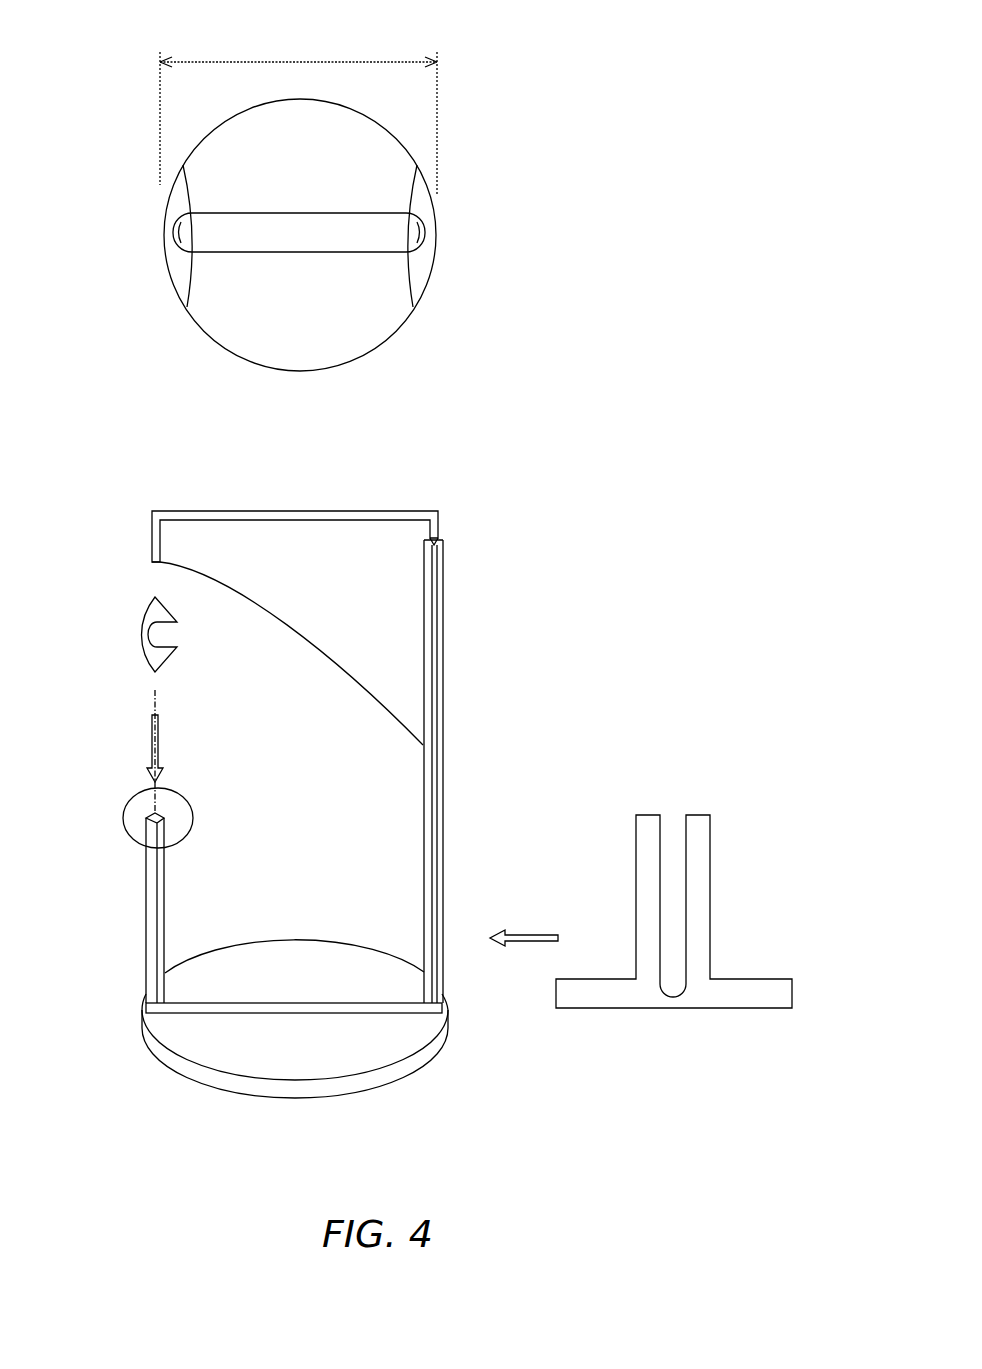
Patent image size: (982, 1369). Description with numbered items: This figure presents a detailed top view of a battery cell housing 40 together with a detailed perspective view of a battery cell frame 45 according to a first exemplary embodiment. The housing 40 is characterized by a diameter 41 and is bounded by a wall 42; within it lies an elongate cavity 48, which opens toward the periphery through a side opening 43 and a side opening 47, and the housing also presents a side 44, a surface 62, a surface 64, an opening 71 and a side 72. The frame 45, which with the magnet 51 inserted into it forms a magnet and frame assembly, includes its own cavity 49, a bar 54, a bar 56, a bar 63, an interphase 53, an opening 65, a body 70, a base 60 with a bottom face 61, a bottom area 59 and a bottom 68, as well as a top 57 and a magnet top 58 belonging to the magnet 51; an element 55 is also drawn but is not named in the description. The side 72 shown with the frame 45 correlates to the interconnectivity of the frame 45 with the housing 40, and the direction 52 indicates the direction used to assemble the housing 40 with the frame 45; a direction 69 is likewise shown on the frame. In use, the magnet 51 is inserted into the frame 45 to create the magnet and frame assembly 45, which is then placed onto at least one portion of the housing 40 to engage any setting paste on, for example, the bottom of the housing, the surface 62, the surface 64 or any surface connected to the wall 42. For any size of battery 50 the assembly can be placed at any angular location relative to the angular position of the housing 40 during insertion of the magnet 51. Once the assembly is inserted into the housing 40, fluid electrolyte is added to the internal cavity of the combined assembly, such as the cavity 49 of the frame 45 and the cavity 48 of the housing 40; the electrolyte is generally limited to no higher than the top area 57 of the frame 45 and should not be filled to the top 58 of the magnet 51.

The housing 40 is at (580, 138).
The diameter 41 is at (297, 58).
The wall 42 is at (168, 275).
The side opening 43 is at (196, 236).
The side 44 is at (418, 200).
The frame 45 is at (570, 565).
The side opening 47 is at (400, 226).
The cavity 48 is at (302, 226).
The cavity 49 is at (333, 798).
The battery 50 is at (612, 451).
The magnet 51 is at (315, 545).
The direction 52 is at (153, 740).
The interphase 53 is at (130, 803).
The bar 54 is at (152, 932).
The right post 55 is at (700, 888).
The bar 56 is at (157, 517).
The top 57 is at (440, 538).
The magnet top 58 is at (217, 515).
The bottom area 59 is at (387, 1015).
The base 60 is at (147, 1050).
The bottom face 61 is at (378, 977).
The surface 62 is at (265, 322).
The bar 63 is at (438, 668).
The surface 64 is at (340, 133).
The opening 65 is at (668, 926).
The bottom 68 is at (628, 1010).
The direction 69 is at (530, 933).
The body 70 is at (585, 997).
The opening 71 is at (227, 213).
The side 72 is at (142, 633).